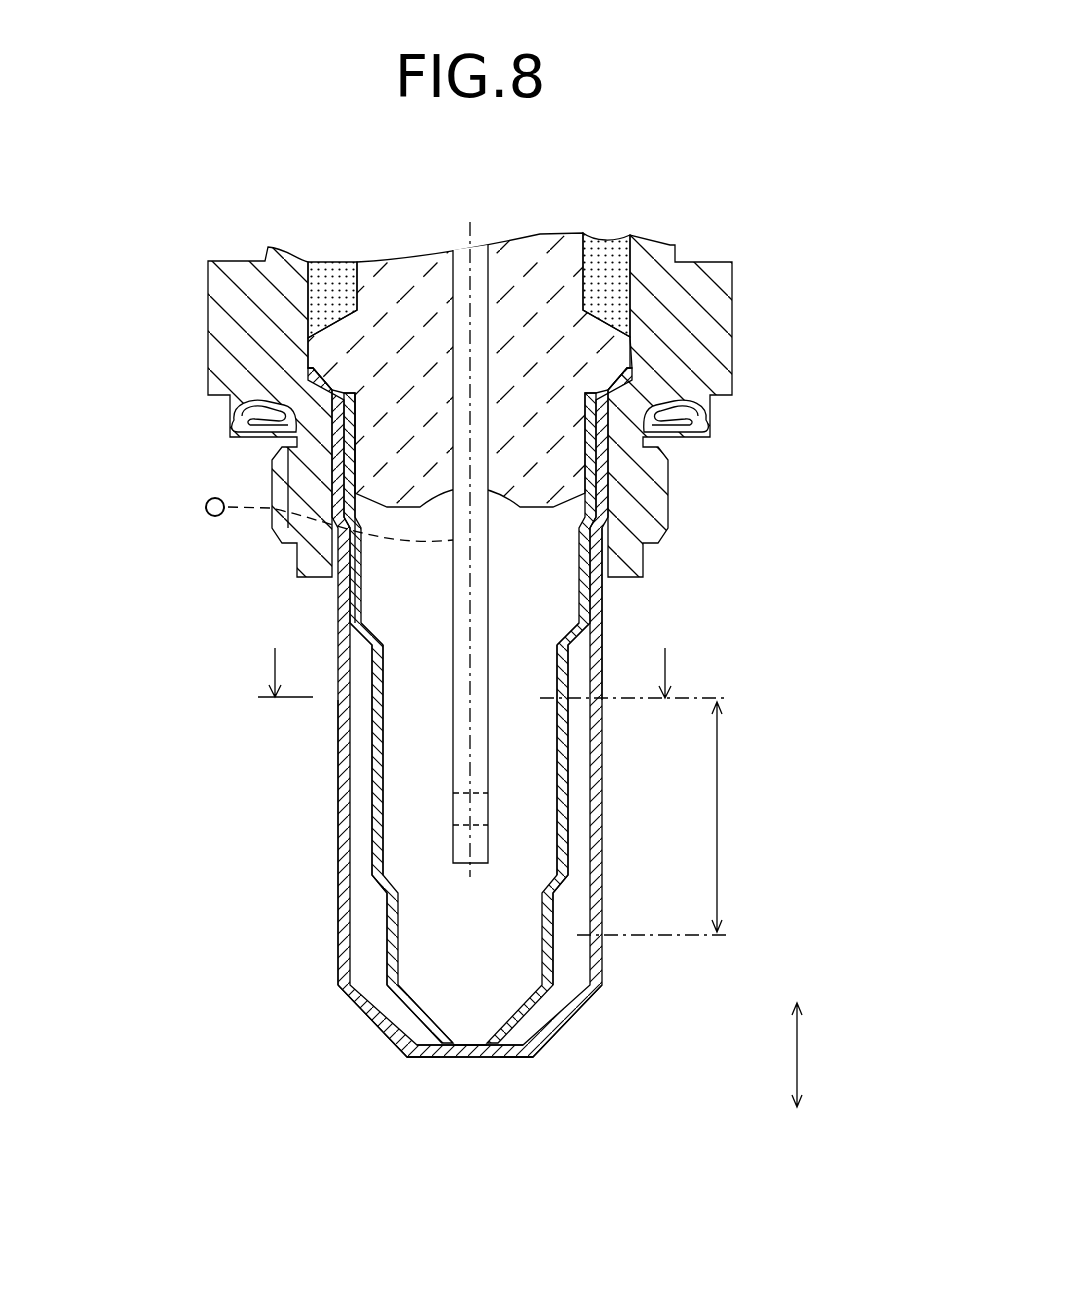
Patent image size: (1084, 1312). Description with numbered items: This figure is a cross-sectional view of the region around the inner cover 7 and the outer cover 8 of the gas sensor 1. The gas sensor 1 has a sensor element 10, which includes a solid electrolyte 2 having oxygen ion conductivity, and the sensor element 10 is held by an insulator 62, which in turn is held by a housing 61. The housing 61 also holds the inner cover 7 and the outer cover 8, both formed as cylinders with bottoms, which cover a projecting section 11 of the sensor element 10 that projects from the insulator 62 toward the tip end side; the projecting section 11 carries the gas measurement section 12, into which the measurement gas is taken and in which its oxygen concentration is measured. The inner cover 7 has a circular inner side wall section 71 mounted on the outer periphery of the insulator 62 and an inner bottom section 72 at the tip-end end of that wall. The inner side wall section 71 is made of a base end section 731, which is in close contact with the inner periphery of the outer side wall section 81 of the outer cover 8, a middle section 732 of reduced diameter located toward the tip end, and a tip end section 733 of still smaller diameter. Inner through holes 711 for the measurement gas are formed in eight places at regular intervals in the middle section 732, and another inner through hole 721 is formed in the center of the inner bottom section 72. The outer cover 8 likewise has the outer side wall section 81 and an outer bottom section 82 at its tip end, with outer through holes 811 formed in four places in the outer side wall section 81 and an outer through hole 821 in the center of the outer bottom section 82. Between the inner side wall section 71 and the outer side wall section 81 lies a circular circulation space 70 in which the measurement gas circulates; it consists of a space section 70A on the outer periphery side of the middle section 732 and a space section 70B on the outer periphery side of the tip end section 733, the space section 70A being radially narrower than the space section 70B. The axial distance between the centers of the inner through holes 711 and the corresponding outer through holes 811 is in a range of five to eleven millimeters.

The gas sensor 1 is at (500, 637).
The solid electrolyte 2 is at (500, 396).
The housing 61 is at (695, 345).
The insulator 62 is at (378, 348).
The sensor element 10 is at (487, 551).
The projecting section 11 is at (480, 722).
The gas measurement section 12 is at (453, 815).
The inner cover 7 is at (443, 782).
The inner side wall section 71 is at (582, 795).
The inner bottom section 72 is at (480, 1108).
The inner through holes 711 is at (380, 698).
The inner through hole 721 is at (463, 1057).
The base end section 731 is at (342, 587).
The middle section 732 is at (379, 768).
The tip end section 733 is at (388, 967).
The outer cover 8 is at (489, 760).
The outer side wall section 81 is at (600, 613).
The outer bottom section 82 is at (413, 1057).
The outer through holes 811 is at (343, 942).
The outer through hole 821 is at (517, 1057).
The circulation space 70 is at (525, 868).
The space section 70A is at (575, 732).
The space section 70B is at (568, 918).